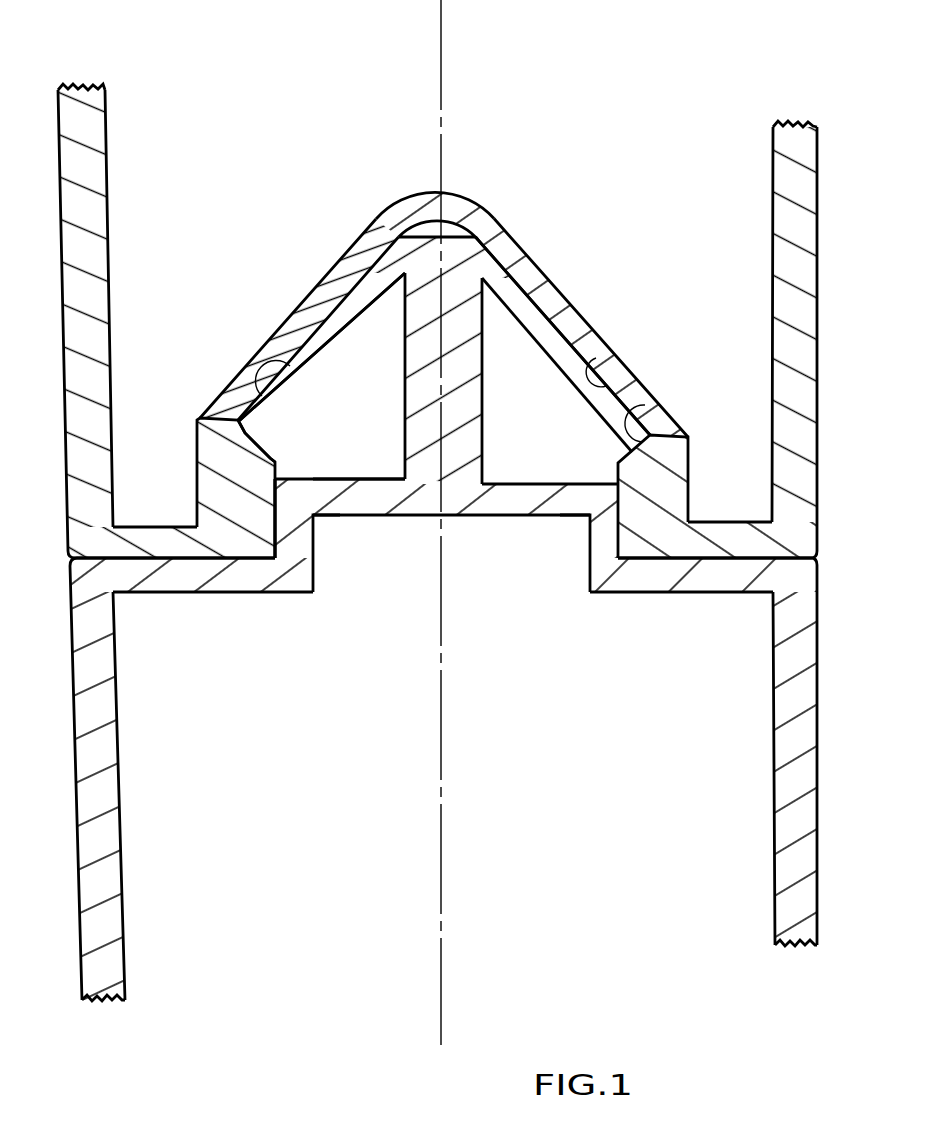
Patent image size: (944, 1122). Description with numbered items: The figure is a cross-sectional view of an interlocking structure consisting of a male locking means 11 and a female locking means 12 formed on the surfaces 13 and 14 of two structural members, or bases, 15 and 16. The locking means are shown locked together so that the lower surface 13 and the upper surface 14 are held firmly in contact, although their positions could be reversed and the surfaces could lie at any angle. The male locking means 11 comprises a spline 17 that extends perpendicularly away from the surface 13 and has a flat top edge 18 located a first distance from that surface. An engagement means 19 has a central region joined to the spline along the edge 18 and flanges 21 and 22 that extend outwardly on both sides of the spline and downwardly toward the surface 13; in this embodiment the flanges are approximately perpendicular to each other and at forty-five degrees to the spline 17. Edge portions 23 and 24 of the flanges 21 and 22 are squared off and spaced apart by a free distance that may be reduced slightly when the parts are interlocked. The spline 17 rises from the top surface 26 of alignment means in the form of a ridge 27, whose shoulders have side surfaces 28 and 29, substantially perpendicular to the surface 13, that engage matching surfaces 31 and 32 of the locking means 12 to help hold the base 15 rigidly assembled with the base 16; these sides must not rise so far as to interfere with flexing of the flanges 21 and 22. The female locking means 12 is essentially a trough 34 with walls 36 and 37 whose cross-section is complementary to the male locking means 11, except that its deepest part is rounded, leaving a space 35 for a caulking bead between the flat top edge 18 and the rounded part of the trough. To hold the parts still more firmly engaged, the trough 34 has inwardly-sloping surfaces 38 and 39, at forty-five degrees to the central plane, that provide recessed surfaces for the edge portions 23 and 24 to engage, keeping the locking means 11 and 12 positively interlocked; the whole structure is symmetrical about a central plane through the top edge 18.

The male locking means 11 is at (512, 270).
The female locking means 12 is at (311, 360).
The lower surface 13 is at (752, 556).
The upper surface 14 is at (757, 566).
The structural member 15 is at (820, 720).
The structural member 16 is at (820, 392).
The spline 17 is at (484, 409).
The edge 18 is at (456, 195).
The engagement means 19 is at (358, 275).
The flange 21 is at (556, 316).
The flange 22 is at (335, 335).
The edge portion 23 is at (690, 460).
The edge portion 24 is at (238, 429).
The top surface 26 is at (538, 485).
The ridge 27 is at (368, 475).
The side surface 28 is at (612, 504).
The side surface 29 is at (275, 515).
The matching surface 31 is at (602, 527).
The matching surface 32 is at (276, 527).
The trough 34 is at (535, 313).
The space 35 is at (478, 231).
The wall 36 is at (606, 380).
The wall 37 is at (262, 396).
The inwardly-sloping surface 38 is at (646, 406).
The inwardly-sloping surface 39 is at (250, 439).